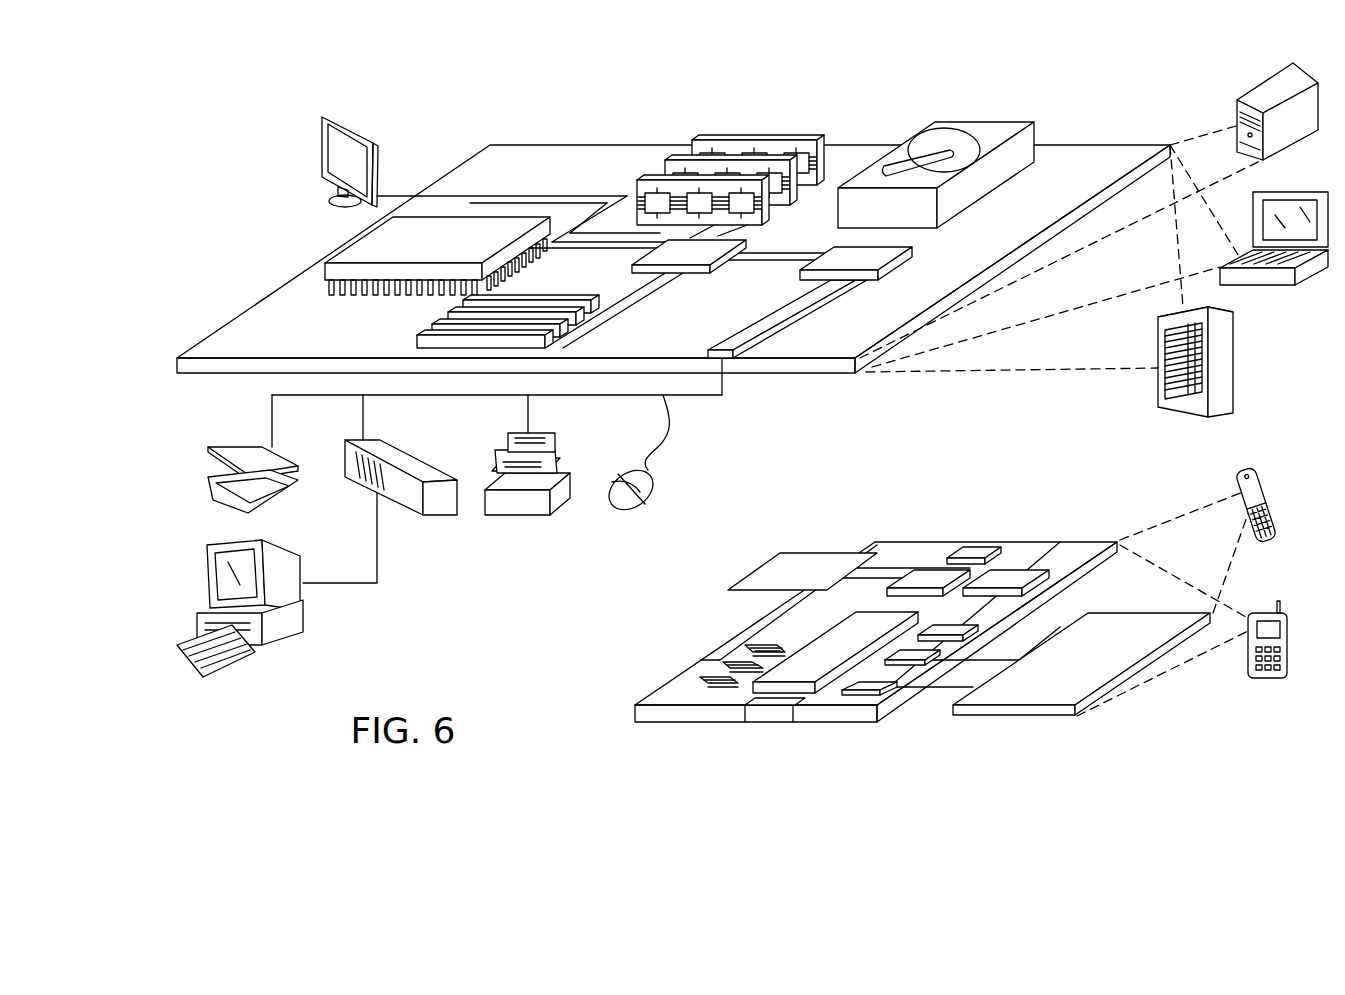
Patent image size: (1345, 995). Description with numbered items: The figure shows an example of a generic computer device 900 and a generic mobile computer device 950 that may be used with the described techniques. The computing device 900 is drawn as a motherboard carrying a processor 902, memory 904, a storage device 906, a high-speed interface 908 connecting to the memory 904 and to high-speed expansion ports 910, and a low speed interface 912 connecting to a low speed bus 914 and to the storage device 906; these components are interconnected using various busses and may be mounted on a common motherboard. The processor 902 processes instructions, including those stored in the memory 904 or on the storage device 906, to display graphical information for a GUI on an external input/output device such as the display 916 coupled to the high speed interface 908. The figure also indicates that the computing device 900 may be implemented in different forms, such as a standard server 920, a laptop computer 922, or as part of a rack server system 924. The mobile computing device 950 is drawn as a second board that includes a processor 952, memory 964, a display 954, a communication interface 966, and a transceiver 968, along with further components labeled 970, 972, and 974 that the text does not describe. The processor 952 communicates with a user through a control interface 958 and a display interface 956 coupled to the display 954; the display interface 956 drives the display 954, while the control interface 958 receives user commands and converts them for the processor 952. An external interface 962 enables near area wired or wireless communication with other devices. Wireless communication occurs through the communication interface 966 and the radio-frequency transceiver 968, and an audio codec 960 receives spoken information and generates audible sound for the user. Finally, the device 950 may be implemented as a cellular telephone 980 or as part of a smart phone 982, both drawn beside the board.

The generic computer device 900 is at (441, 90).
The processor 902 is at (346, 250).
The memory 904 is at (757, 145).
The storage device 906 is at (982, 122).
The high-speed interface 908 is at (700, 252).
The high-speed expansion ports 910 is at (437, 323).
The low speed interface 912 is at (832, 258).
The low speed bus 914 is at (722, 345).
The display 916 is at (322, 116).
The standard server 920 is at (1255, 95).
The laptop computer 922 is at (1305, 190).
The rack server system 924 is at (1233, 362).
The generic mobile computer device 950 is at (592, 732).
The processor 952 is at (813, 660).
The display 954 is at (1115, 630).
The display interface 956 is at (892, 693).
The control interface 958 is at (924, 655).
The audio codec 960 is at (950, 626).
The external interface 962 is at (770, 713).
The memory 964 is at (724, 660).
The communication interface 966 is at (925, 575).
The transceiver 968 is at (1011, 584).
The component chip 970 is at (975, 548).
The bus / rail 972 is at (860, 552).
The battery / module 974 is at (782, 552).
The cellular telephone 980 is at (1250, 468).
The smart phone 982 is at (1262, 612).